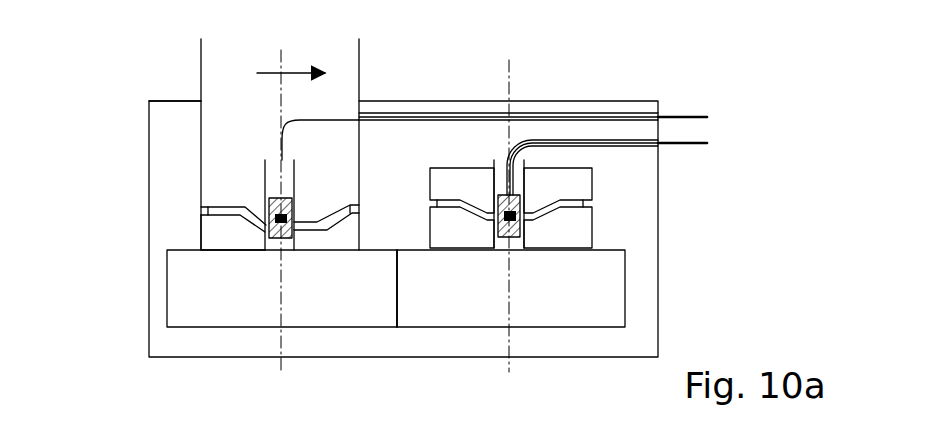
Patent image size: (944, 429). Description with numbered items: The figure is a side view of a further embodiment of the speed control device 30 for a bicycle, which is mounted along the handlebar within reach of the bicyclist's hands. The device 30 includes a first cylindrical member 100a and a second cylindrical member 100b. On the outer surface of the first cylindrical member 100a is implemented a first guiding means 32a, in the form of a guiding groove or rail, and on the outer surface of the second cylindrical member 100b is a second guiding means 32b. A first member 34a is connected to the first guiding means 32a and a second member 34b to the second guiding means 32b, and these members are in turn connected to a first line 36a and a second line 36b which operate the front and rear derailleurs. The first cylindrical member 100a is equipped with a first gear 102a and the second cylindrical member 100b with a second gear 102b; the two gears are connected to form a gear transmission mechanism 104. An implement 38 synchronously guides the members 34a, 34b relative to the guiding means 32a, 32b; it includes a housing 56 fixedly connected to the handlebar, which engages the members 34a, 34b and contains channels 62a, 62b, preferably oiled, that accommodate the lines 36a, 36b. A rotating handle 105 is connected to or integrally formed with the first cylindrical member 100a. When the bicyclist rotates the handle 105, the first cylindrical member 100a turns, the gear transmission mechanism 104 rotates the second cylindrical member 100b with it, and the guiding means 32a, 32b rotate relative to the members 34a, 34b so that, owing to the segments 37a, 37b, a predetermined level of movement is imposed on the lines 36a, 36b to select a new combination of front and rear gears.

The speed control device 30 is at (419, 208).
The implement 38 is at (133, 283).
The housing 56 is at (172, 127).
The rotating handle 105 is at (247, 80).
The first cylindrical member 100a is at (222, 143).
The segment 37a is at (222, 207).
The first guiding means 32a is at (212, 220).
The first member 34a is at (277, 240).
The second cylindrical member 100b is at (577, 182).
The segment 37b is at (447, 213).
The second guiding means 32b is at (470, 200).
The second member 34b is at (517, 235).
The first gear 102a is at (325, 287).
The second gear 102b is at (592, 285).
The gear transmission mechanism 104 is at (395, 333).
The channel 62a is at (540, 113).
The first line 36a is at (687, 112).
The channel 62b is at (643, 147).
The second line 36b is at (692, 147).